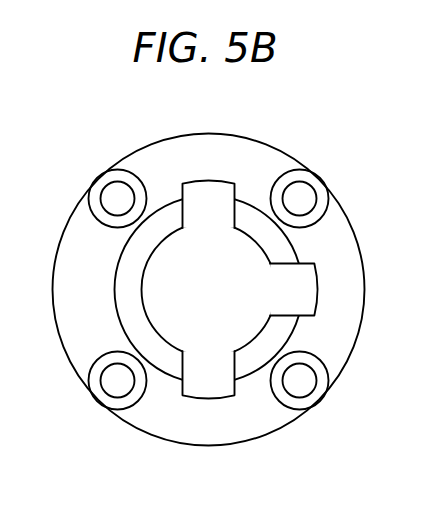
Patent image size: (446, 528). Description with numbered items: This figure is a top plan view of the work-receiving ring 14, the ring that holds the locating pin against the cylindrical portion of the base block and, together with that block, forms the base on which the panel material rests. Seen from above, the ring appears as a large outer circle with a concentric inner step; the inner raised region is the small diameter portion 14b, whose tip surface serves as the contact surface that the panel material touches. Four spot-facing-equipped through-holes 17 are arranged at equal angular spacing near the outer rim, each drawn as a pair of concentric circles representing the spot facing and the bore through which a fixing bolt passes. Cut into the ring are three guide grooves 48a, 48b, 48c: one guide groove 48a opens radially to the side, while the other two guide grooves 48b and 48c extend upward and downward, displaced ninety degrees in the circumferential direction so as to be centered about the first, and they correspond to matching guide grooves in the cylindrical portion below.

The work-receiving ring 14 is at (236, 164).
The small diameter portion 14b is at (277, 332).
The spot-facing-equipped through-holes 17 is at (118, 199).
The guide groove 48a is at (303, 289).
The guide groove 48b is at (205, 187).
The guide groove 48c is at (207, 389).